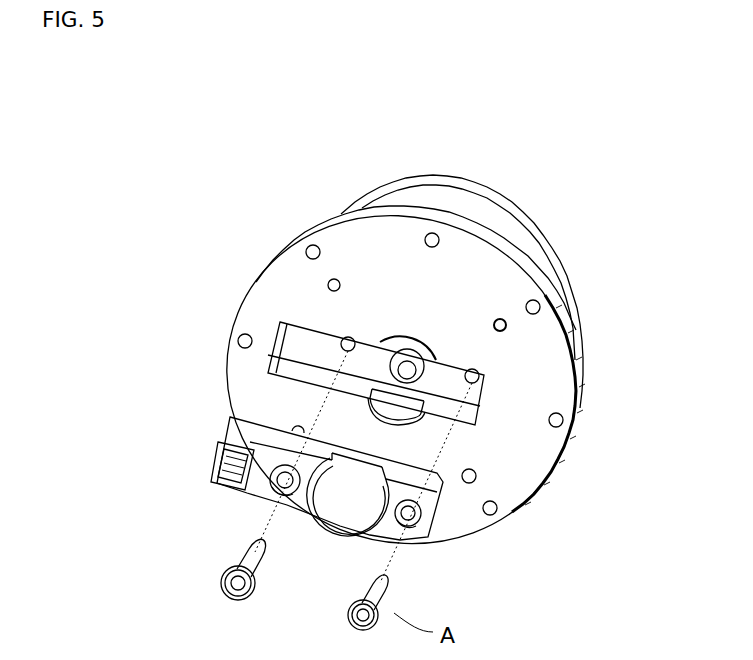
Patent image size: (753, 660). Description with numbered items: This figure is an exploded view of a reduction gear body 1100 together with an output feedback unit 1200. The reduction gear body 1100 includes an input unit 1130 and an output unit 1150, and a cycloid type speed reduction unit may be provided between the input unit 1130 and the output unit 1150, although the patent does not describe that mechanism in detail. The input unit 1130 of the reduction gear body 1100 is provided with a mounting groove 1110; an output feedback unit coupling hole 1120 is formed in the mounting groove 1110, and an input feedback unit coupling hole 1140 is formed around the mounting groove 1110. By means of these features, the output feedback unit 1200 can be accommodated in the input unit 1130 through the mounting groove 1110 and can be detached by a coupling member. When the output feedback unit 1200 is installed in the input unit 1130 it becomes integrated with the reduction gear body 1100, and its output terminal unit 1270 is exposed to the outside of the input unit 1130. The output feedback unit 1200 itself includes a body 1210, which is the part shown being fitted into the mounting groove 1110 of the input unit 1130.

The reduction gear body 1100 is at (362, 212).
The mounting groove 1110 is at (473, 427).
The output feedback unit coupling hole 1120 is at (288, 344).
The input unit 1130 is at (218, 376).
The input feedback unit coupling hole 1140 is at (501, 319).
The output unit 1150 is at (459, 172).
The output feedback unit 1200 is at (446, 512).
The body 1210 is at (410, 526).
The output terminal unit 1270 is at (222, 476).